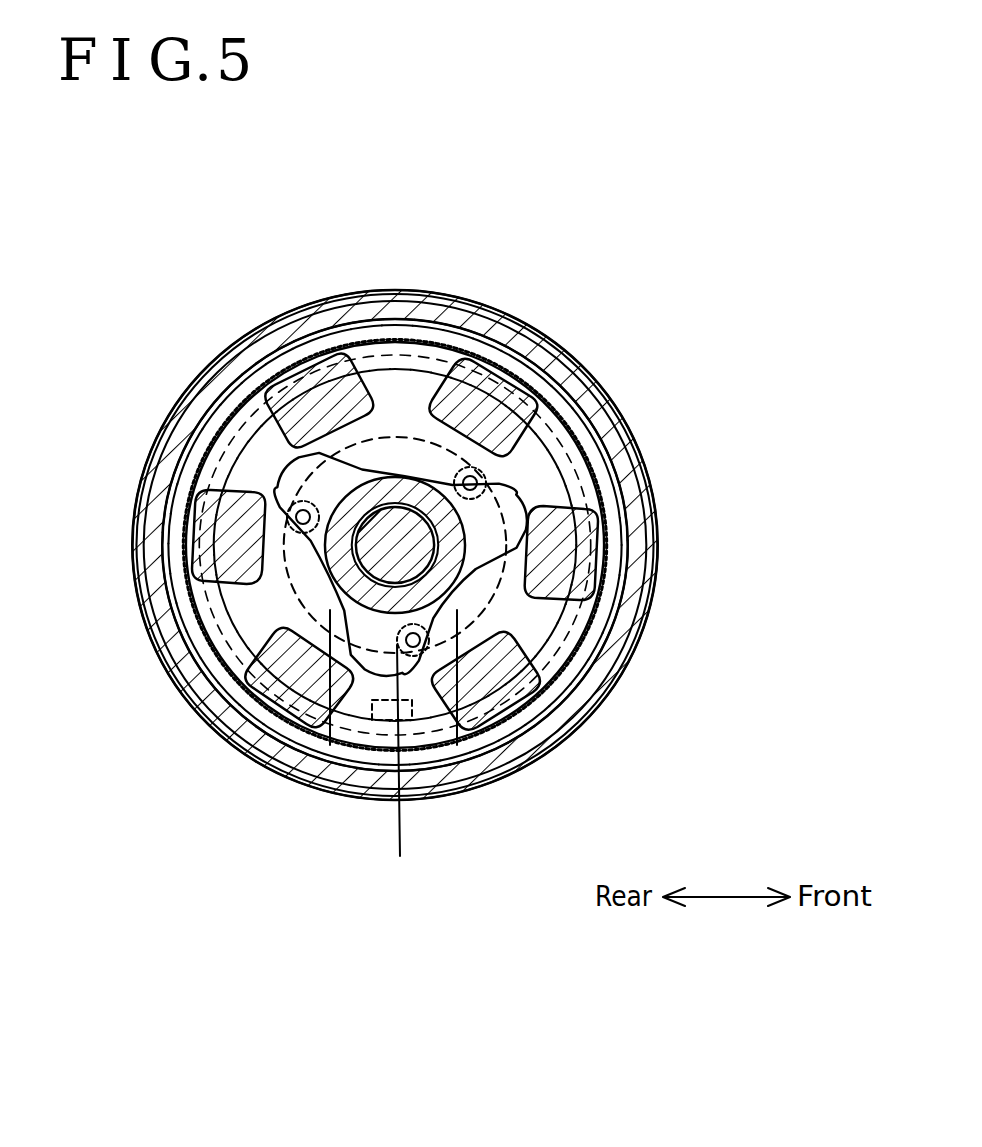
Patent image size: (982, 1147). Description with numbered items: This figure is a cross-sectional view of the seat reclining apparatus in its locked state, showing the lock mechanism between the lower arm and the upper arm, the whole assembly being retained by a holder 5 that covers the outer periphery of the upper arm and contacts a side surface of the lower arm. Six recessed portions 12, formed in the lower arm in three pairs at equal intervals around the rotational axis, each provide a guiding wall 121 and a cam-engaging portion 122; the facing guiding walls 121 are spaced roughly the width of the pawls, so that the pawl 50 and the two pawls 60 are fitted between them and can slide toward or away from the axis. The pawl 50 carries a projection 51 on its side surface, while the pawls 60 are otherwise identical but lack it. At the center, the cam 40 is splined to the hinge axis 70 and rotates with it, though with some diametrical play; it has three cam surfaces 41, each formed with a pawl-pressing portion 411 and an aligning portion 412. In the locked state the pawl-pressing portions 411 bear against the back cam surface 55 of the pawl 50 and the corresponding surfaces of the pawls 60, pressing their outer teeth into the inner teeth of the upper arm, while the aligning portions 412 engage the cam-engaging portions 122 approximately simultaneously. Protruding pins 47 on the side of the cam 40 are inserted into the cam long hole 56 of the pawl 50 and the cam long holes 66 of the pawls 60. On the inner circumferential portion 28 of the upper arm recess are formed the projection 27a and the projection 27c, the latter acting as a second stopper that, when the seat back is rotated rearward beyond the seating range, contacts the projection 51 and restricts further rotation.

The holder 5 is at (660, 494).
The recessed portion 12 is at (335, 435).
The guiding wall 121 is at (270, 420).
The cam-engaging portion 122 is at (383, 400).
The projection 27a is at (582, 657).
The projection 27c is at (275, 665).
The inner circumferential portion 28 is at (650, 590).
The cam 40 is at (600, 642).
The cam surface 41 is at (448, 574).
The pawl-pressing portion 411 is at (292, 512).
The aligning portion 412 is at (300, 505).
The protruding pin 47 is at (636, 343).
The pawl 50 is at (470, 710).
The projection 51 is at (432, 700).
The back cam surface 55 is at (525, 757).
The cam long hole 56 is at (320, 648).
The pawl 60 is at (218, 365).
The cam long hole 66 is at (292, 468).
The hinge axis 70 is at (430, 548).